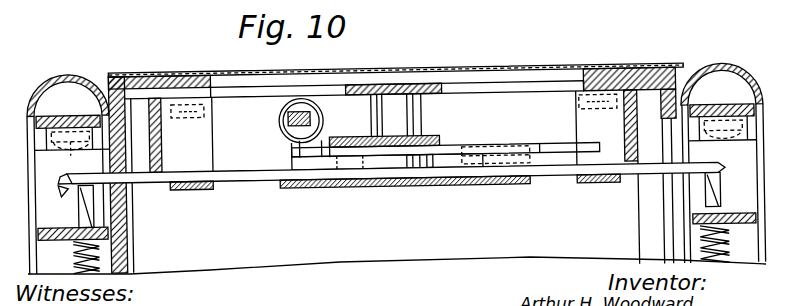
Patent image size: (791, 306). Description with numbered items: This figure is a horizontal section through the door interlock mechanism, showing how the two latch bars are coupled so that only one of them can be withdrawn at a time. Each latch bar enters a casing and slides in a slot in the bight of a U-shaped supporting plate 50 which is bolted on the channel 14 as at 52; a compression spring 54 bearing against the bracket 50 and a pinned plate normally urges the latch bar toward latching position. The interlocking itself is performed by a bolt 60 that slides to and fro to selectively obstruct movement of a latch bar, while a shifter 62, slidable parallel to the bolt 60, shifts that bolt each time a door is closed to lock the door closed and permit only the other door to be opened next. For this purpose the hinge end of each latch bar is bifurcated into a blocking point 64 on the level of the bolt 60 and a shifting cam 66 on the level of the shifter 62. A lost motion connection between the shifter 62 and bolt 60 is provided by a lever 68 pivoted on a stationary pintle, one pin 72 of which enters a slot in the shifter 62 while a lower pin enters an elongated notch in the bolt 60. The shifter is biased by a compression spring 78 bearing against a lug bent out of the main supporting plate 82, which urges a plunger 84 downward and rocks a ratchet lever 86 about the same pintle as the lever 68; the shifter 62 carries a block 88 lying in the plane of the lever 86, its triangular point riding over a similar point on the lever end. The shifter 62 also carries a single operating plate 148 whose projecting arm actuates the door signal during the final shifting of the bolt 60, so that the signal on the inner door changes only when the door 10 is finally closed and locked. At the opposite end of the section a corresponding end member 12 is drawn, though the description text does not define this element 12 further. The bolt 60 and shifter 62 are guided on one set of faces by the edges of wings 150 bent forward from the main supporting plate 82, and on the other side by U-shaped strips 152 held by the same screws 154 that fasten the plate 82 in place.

The door 10 is at (703, 66).
The dome-shaped end cap 12 is at (68, 69).
The channel 14 is at (736, 116).
The U-shaped supporting plate 50 is at (693, 223).
The bolt fastening 52 is at (717, 109).
The compression spring 54 is at (693, 245).
The bolt 60 is at (97, 175).
The shifter 62 is at (263, 176).
The blocking point 64 is at (90, 190).
The shifting cam 66 is at (80, 184).
The lever 68 is at (428, 139).
The pin 72 is at (448, 153).
The compression spring 78 is at (283, 110).
The main supporting plate 82 is at (397, 88).
The plunger 84 is at (283, 122).
The ratchet lever 86 is at (445, 172).
The block 88 is at (502, 160).
The operating plate 148 is at (497, 184).
The wings 150 is at (155, 95).
The U-shaped strips 152 is at (213, 194).
The screws 154 is at (193, 117).